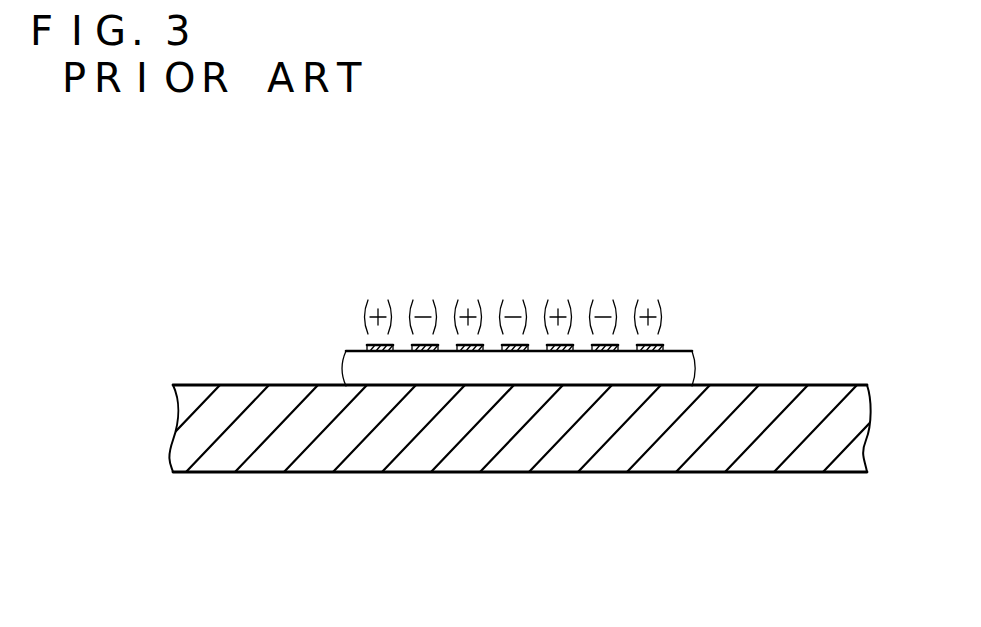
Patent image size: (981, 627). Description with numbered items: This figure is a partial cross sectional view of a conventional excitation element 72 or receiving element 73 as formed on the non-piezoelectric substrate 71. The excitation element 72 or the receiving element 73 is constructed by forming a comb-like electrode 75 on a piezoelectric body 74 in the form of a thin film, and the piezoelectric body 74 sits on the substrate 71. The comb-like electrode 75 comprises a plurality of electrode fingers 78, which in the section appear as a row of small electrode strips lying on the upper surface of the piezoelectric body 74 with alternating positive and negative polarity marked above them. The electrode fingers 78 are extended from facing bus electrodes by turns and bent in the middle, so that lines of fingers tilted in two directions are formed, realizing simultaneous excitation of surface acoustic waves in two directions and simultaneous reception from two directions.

The non-piezoelectric substrate 71 is at (820, 397).
The excitation element 72 is at (738, 312).
The receiving element 73 is at (490, 292).
The piezoelectric body 74 is at (673, 358).
The comb-like electrode 75 is at (362, 345).
The electrode fingers 78 is at (438, 346).